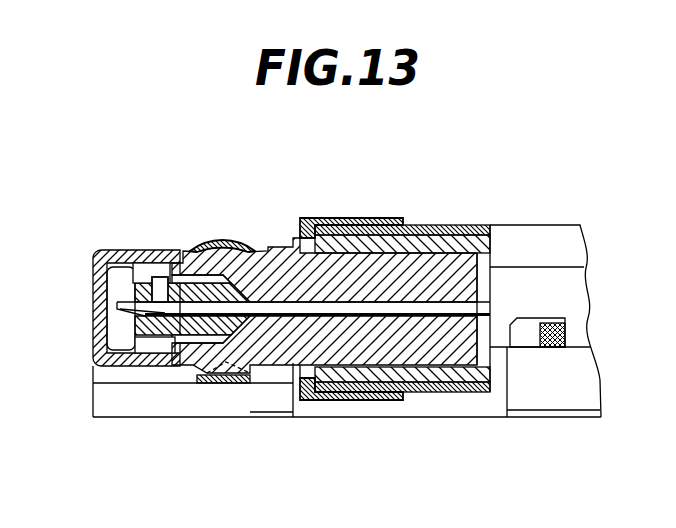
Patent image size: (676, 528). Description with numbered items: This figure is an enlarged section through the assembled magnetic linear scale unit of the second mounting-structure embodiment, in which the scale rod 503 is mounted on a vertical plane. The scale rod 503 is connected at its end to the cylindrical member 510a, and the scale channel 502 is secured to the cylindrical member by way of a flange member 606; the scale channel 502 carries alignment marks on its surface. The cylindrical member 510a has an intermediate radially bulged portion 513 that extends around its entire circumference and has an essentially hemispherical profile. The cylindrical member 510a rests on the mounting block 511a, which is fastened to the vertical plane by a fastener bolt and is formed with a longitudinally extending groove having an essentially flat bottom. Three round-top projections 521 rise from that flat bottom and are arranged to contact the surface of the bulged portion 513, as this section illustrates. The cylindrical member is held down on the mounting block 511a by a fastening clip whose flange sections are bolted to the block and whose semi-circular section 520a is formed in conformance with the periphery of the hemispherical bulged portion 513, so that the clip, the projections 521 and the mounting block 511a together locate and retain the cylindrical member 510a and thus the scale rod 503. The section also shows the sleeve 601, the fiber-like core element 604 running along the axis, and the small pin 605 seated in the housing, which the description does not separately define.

The scale channel 502 is at (520, 228).
The scale rod 503 is at (421, 302).
The cylindrical member 510a is at (283, 350).
The mounting block 511a is at (150, 375).
The bulged portion 513 is at (243, 384).
The semi-circular section 520a is at (223, 240).
The round-top projection 521 is at (207, 373).
The sleeve 601 is at (366, 302).
The optical fiber 604 is at (117, 308).
The pin 605 is at (160, 292).
The flange member 606 is at (308, 218).